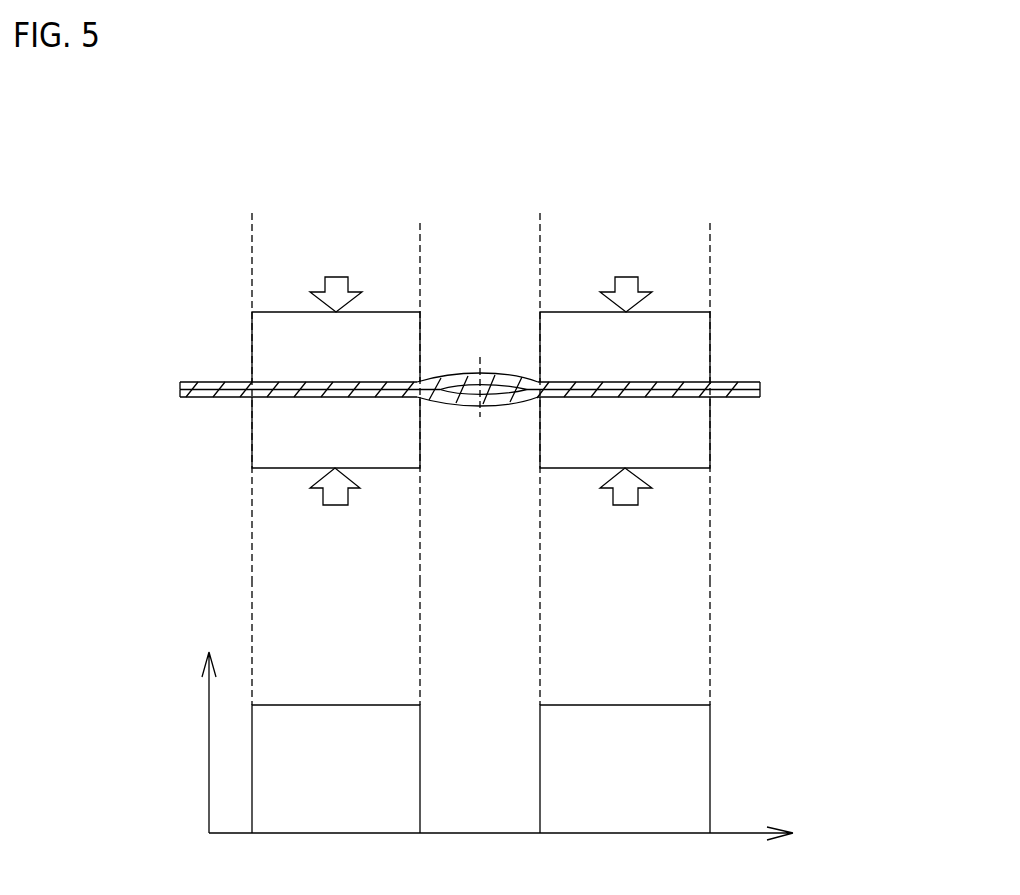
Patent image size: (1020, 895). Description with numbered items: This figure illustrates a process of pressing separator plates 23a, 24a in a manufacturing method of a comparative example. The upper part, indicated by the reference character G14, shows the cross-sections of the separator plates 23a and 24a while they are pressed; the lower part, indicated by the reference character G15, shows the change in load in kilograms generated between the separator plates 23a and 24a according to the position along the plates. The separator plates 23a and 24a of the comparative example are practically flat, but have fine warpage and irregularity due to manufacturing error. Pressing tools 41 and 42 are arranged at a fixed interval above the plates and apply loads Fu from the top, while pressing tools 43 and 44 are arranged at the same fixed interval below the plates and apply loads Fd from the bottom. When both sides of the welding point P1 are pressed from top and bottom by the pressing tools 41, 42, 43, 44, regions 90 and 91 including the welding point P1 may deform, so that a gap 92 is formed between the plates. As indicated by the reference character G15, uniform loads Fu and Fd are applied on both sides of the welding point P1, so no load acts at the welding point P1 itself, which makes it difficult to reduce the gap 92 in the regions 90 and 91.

The pressing tool 41 is at (647, 312).
The pressing tool 42 is at (372, 312).
The pressing tool 43 is at (662, 468).
The pressing tool 44 is at (370, 468).
The region 90 is at (460, 373).
The region 91 is at (455, 405).
The gap 92 is at (492, 387).
The separator plate 24a is at (178, 383).
The separator plate 23a is at (178, 397).
The welding point P1 is at (476, 407).
The cross-sections G14 is at (748, 235).
The change in load G15 is at (748, 675).
The load Fu is at (481, 276).
The load Fd is at (481, 504).